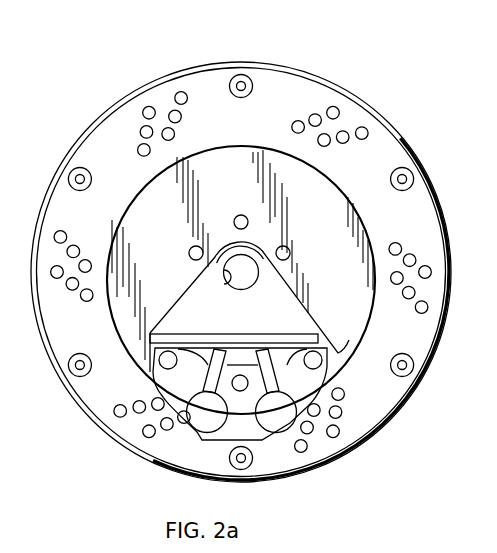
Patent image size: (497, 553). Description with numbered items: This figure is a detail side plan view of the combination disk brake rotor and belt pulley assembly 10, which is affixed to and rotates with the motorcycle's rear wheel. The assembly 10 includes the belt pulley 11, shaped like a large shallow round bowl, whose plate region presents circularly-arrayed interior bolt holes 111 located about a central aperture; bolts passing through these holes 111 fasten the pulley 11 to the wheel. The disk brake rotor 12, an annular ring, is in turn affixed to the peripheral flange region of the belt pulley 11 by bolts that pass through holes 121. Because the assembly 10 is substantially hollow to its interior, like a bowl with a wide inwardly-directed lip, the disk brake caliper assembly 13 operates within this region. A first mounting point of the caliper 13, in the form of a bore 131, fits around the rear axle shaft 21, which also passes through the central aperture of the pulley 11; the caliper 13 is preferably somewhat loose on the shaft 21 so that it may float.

The combination disk brake rotor and belt pulley assembly 10 is at (385, 110).
The belt pulley 11 is at (249, 193).
The interior bolt holes 111 is at (248, 221).
The disk brake rotor 12 is at (411, 240).
The bolt holes 121 is at (86, 168).
The disk brake caliper assembly 13 is at (284, 330).
The bore 131 is at (226, 278).
The rear axle shaft 21 is at (250, 275).